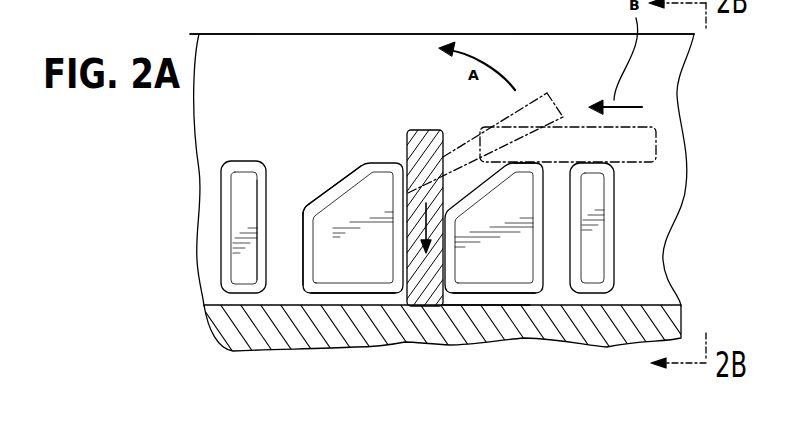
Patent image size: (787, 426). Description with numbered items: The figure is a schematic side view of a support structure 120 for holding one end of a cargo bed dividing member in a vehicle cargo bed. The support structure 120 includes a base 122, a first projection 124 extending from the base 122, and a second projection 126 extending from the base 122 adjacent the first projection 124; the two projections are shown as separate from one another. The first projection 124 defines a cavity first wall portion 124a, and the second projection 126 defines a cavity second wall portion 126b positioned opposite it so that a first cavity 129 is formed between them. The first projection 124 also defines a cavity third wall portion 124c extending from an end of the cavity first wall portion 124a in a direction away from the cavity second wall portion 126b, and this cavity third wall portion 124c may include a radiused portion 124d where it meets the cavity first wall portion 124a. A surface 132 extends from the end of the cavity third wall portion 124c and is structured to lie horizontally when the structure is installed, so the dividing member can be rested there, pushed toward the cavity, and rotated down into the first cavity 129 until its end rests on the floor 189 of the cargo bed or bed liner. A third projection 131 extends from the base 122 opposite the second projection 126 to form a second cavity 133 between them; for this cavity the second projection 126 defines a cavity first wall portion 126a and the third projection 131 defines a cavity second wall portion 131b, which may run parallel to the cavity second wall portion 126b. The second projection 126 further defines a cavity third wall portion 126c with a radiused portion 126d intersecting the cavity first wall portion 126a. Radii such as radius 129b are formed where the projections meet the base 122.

The support structure 120 is at (697, 137).
The base 122 is at (248, 77).
The first projection 124 is at (505, 265).
The cavity first wall portion 124a is at (447, 275).
The cavity third wall portion 124c is at (473, 190).
The radiused portion 124d is at (448, 210).
The second projection 126 is at (353, 270).
The cavity first wall portion 126a is at (302, 267).
The cavity second wall portion 126b is at (407, 298).
The cavity third wall portion 126c is at (343, 182).
The radiused portion 126d is at (290, 212).
The first cavity 129 is at (419, 266).
The radius 129b is at (510, 298).
The third projection 131 is at (248, 175).
The cavity second wall portion 131b is at (263, 256).
The surface 132 is at (517, 162).
The second cavity 133 is at (303, 208).
The floor 189 is at (650, 307).